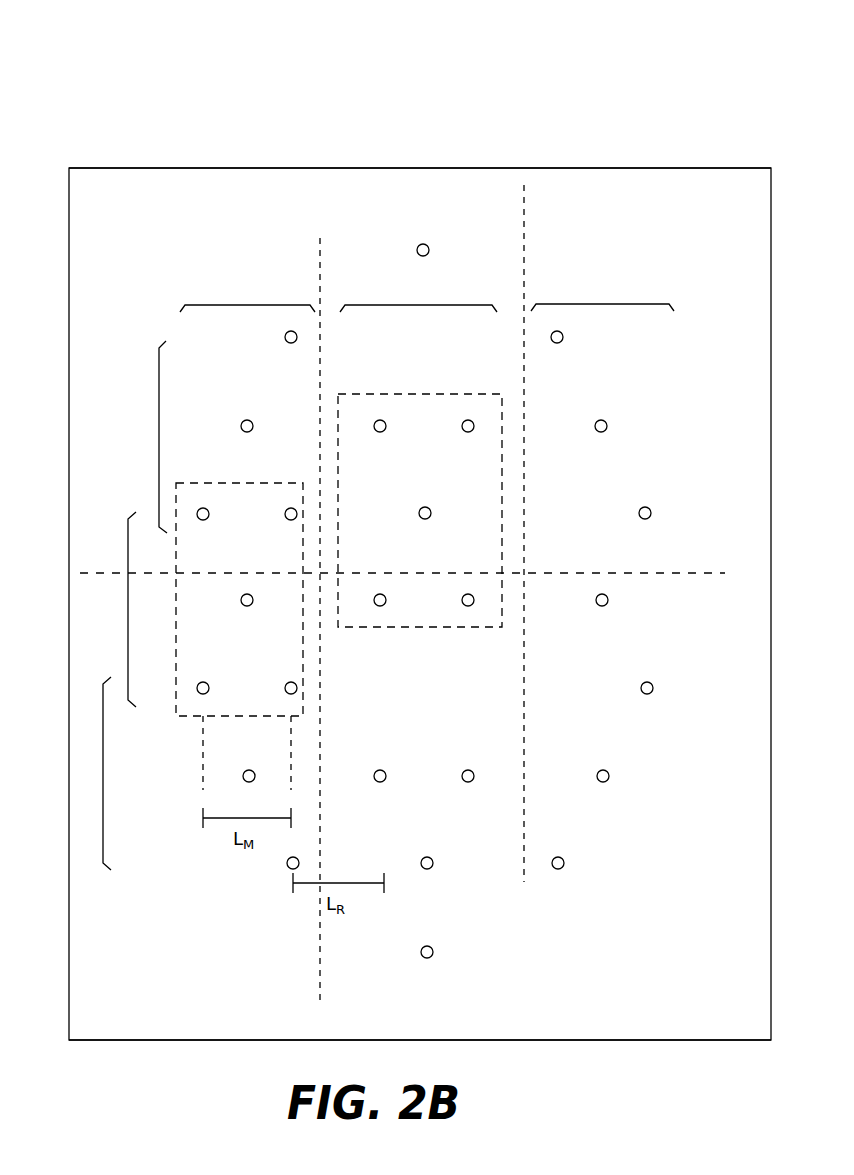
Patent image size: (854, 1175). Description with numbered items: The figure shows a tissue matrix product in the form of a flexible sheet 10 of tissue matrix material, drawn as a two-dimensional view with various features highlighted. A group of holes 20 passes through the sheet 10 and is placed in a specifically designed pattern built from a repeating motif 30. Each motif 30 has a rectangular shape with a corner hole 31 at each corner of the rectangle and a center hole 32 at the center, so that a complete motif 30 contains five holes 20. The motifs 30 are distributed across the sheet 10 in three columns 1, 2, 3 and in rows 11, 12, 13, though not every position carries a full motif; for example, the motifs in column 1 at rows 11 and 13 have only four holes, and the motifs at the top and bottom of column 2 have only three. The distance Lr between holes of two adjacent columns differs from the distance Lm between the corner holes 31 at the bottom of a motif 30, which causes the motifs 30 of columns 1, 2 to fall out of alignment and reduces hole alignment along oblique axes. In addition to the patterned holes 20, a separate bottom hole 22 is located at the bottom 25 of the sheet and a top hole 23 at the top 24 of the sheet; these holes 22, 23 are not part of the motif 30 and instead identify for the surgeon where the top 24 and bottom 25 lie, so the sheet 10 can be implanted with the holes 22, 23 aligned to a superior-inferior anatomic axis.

The flexible sheet 10 is at (733, 78).
The first column 1 is at (220, 304).
The second column 2 is at (428, 304).
The third column 3 is at (577, 304).
The first row 11 is at (159, 453).
The second row 12 is at (128, 620).
The third row 13 is at (103, 775).
The holes 20 is at (546, 872).
The bottom hole 22 is at (422, 962).
The top hole 23 is at (425, 238).
The top of the sheet 24 is at (539, 160).
The bottom of the sheet 25 is at (561, 1050).
The motif 30 is at (230, 478).
The corner hole 31 is at (383, 421).
The center hole 32 is at (438, 520).